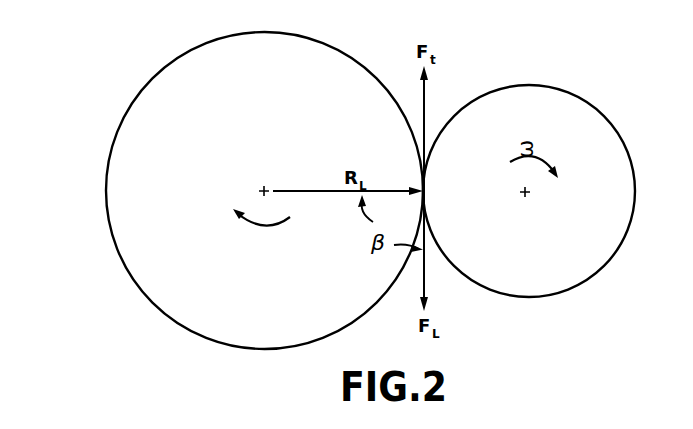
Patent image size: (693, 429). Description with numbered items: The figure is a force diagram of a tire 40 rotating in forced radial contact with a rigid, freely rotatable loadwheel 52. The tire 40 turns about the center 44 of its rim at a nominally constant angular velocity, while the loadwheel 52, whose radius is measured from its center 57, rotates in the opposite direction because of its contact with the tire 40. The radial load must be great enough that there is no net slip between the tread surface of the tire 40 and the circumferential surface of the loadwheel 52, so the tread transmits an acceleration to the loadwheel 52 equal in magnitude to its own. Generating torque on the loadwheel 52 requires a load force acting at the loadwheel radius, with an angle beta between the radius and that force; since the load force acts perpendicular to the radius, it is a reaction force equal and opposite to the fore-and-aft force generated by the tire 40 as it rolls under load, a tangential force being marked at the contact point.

The loadwheel 52 is at (206, 44).
The tire 40 is at (622, 82).
The center of the loadwheel 57 is at (270, 186).
The center of the rim 44 is at (527, 198).